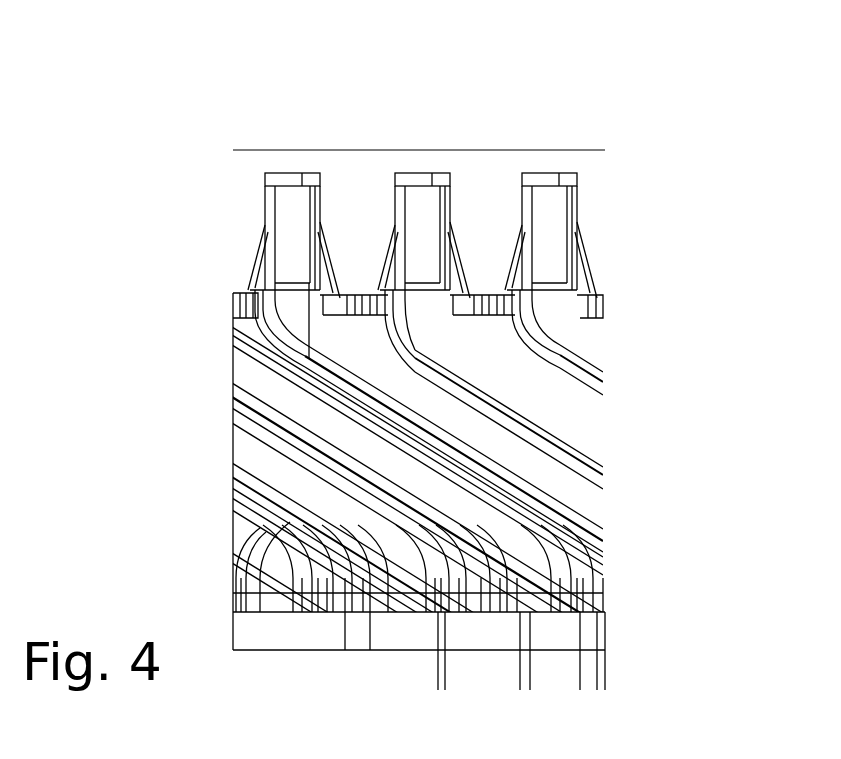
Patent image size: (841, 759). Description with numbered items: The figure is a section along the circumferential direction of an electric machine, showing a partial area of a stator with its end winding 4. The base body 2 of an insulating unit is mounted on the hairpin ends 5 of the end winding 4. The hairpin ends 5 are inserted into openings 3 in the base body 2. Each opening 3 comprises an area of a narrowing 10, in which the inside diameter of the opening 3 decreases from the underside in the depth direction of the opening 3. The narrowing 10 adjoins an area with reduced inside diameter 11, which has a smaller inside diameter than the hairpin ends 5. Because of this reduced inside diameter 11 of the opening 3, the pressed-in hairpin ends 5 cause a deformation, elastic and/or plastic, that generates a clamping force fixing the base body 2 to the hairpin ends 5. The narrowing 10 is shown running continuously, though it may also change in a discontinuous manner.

The base body 2 is at (255, 168).
The openings 3 is at (540, 173).
The end winding 4 is at (210, 295).
The hairpin ends 5 is at (413, 263).
The narrowing 10 is at (577, 270).
The area with reduced inside diameter 11 is at (577, 199).